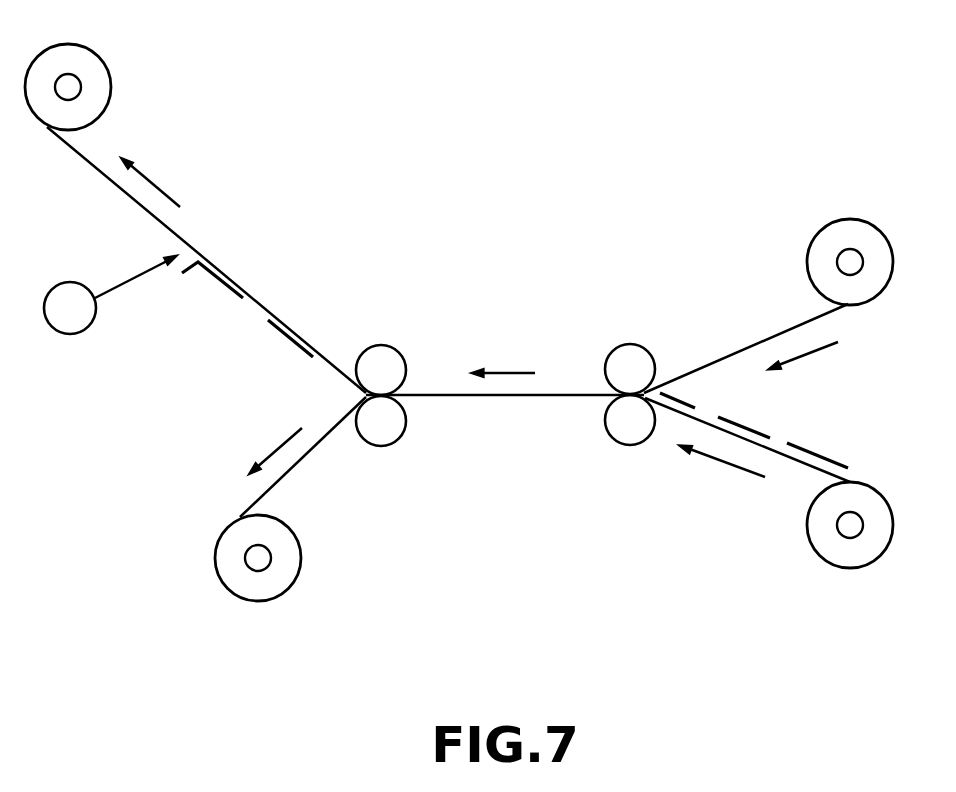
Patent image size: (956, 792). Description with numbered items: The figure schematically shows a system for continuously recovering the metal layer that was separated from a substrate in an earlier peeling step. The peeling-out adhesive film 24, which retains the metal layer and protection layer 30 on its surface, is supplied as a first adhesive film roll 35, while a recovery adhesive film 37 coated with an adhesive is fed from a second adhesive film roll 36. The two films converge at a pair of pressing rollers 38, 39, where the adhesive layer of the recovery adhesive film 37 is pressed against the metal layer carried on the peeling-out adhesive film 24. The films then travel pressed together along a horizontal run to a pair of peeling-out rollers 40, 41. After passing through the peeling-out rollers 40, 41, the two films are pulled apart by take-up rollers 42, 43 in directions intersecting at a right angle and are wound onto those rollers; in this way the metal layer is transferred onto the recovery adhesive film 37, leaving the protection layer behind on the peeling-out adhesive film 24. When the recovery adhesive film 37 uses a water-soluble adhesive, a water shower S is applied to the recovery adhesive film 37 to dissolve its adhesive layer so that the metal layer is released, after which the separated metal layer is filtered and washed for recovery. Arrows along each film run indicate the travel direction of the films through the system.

The peeling-out adhesive film 24 is at (295, 468).
The metal layer with protection layer 30 is at (183, 276).
The first adhesive film roll 35 is at (827, 548).
The second adhesive film roll 36 is at (850, 232).
The recovery adhesive film 37 is at (188, 242).
The pressing roller 38 is at (630, 360).
The pressing roller 39 is at (630, 432).
The peeling-out roller 40 is at (387, 357).
The peeling-out roller 41 is at (390, 433).
The take-up roller 42 is at (277, 585).
The take-up roller 43 is at (97, 73).
The water shower S is at (111, 294).